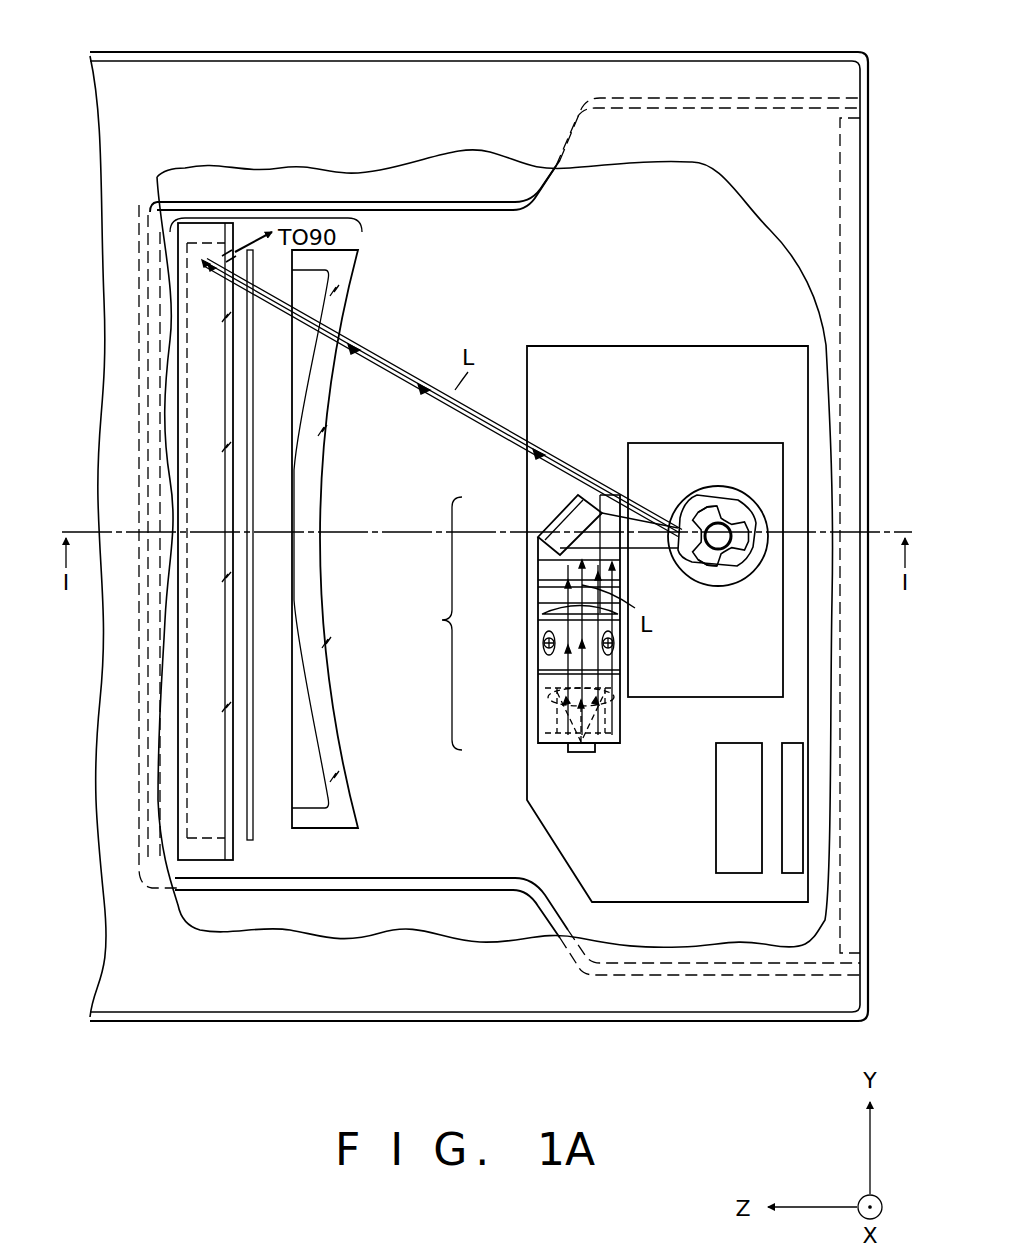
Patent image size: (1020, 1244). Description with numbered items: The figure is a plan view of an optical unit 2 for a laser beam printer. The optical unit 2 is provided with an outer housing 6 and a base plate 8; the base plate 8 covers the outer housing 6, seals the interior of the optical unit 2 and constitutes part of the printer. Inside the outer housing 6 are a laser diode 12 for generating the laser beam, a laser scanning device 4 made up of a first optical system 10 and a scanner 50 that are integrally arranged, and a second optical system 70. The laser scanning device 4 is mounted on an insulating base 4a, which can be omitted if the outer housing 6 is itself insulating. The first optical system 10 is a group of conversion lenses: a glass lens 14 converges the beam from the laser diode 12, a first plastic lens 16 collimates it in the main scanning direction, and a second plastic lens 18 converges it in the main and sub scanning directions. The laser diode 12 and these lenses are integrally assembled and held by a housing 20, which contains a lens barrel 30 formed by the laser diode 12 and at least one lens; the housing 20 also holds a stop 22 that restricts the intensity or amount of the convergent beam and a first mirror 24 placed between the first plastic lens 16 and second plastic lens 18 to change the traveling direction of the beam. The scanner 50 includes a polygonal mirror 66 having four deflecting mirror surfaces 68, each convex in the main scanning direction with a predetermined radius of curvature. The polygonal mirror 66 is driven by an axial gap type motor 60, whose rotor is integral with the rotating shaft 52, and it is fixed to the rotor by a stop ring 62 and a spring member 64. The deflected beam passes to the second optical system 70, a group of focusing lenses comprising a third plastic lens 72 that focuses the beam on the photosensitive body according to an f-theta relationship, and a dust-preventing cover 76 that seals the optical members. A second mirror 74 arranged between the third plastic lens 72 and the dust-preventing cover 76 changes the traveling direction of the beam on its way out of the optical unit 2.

The optical unit 2 is at (872, 50).
The laser scanning device 4 is at (573, 346).
The insulating base 4a is at (648, 366).
The outer housing 6 is at (212, 890).
The base plate 8 is at (503, 52).
The first optical system 10 is at (544, 622).
The laser diode 12 is at (583, 752).
The glass lens 14 is at (538, 708).
The first plastic lens 16 is at (557, 604).
The second plastic lens 18 is at (601, 512).
The housing 20 is at (538, 592).
The stop 22 is at (538, 668).
The first mirror 24 is at (545, 549).
The lens barrel 30 is at (538, 686).
The scanner 50 is at (693, 443).
The rotating shaft 52 is at (716, 520).
The axial gap type motor 60 is at (683, 497).
The stop ring 62 is at (742, 575).
The spring member 64 is at (692, 560).
The polygonal mirror 66 is at (717, 575).
The deflecting mirror surface 68 is at (740, 500).
The second optical system 70 is at (262, 216).
The third plastic lens 72 is at (340, 828).
The second mirror 74 is at (200, 862).
The dust-preventing cover 76 is at (247, 838).